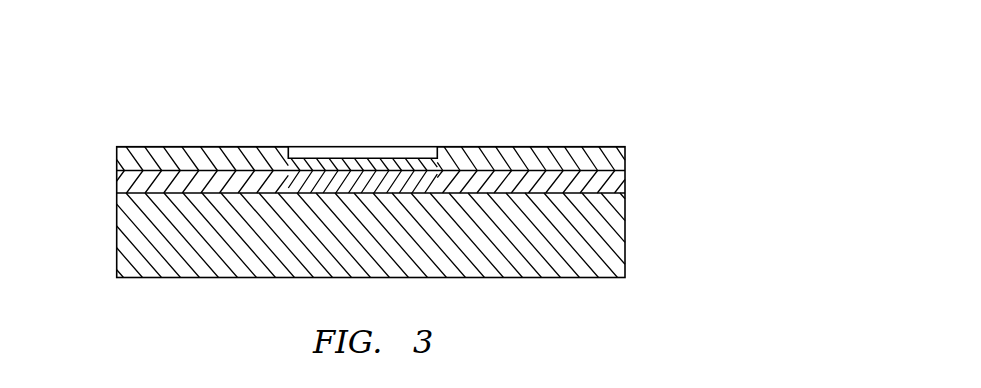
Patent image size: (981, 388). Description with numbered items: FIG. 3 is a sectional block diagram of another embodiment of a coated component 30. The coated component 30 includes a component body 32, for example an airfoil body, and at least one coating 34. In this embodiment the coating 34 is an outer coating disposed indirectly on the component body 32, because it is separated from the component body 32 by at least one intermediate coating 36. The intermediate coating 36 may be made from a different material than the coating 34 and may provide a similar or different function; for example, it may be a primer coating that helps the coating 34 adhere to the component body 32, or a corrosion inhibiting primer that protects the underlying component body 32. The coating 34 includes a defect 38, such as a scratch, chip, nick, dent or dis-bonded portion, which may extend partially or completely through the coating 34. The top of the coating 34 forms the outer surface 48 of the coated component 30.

The coated component 30 is at (630, 103).
The component body 32 is at (135, 244).
The coating 34 is at (127, 160).
The intermediate coating 36 is at (127, 185).
The defect 38 is at (420, 145).
The outer surface 48 is at (149, 146).